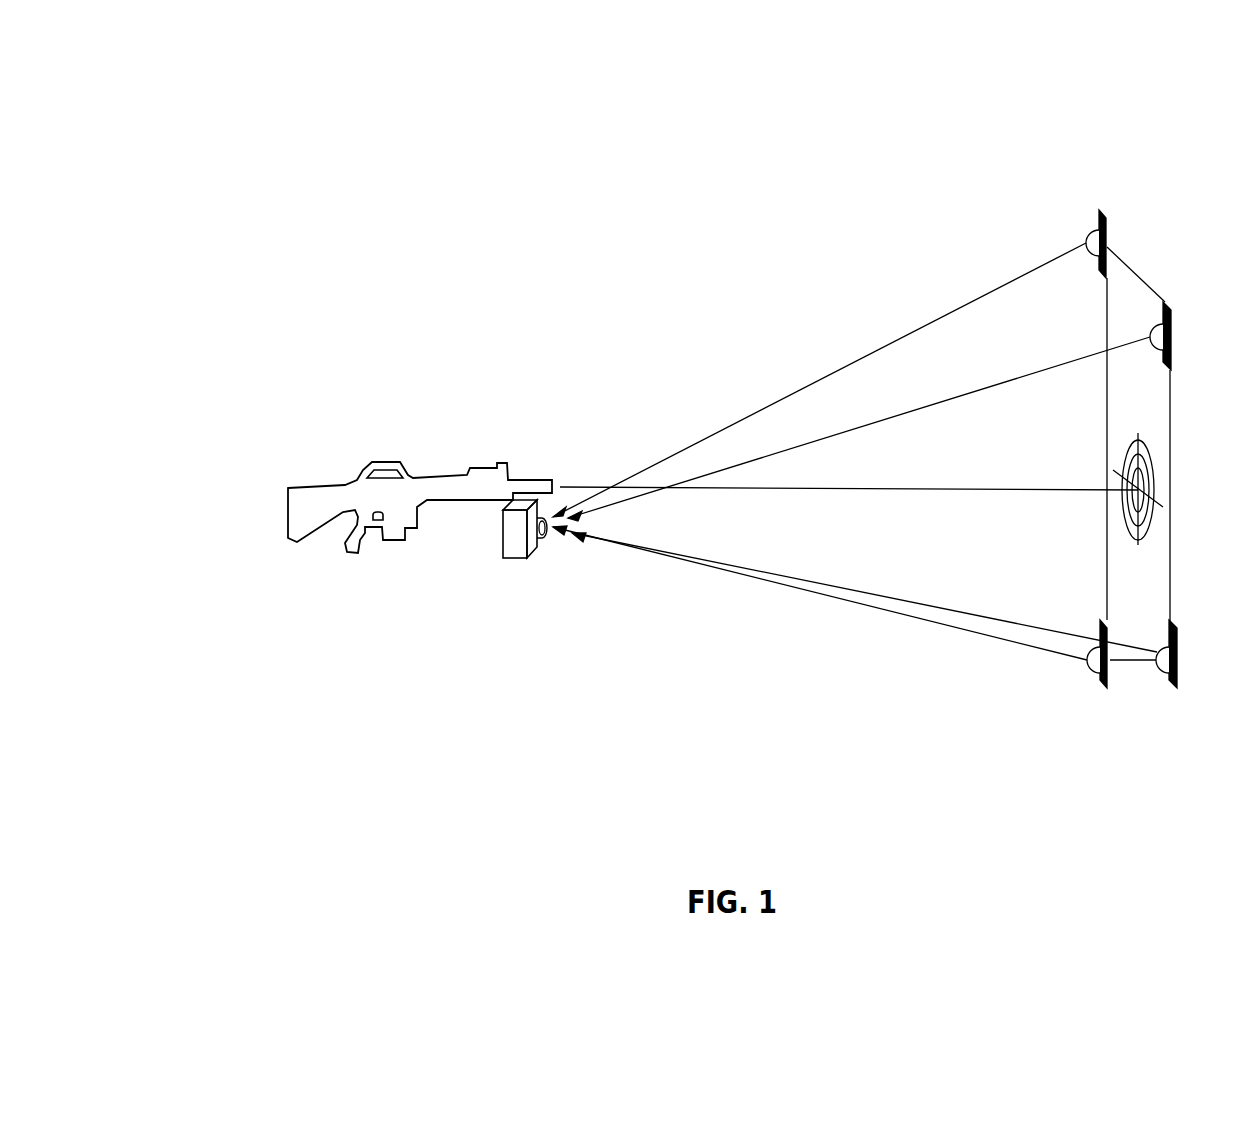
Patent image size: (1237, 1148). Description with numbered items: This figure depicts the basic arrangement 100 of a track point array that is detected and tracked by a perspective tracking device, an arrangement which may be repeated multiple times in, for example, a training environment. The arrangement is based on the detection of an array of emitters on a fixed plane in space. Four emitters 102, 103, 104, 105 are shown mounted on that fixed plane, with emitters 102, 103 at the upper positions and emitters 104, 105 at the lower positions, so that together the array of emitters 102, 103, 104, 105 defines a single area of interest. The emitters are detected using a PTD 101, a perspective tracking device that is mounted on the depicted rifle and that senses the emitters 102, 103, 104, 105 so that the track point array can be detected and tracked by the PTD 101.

The shooting training system 100 is at (267, 162).
The PTD (perspective tracking device) 101 is at (518, 558).
The emitter 102 is at (1100, 208).
The emitter 103 is at (1165, 302).
The emitter 104 is at (1105, 693).
The emitter 105 is at (1173, 693).